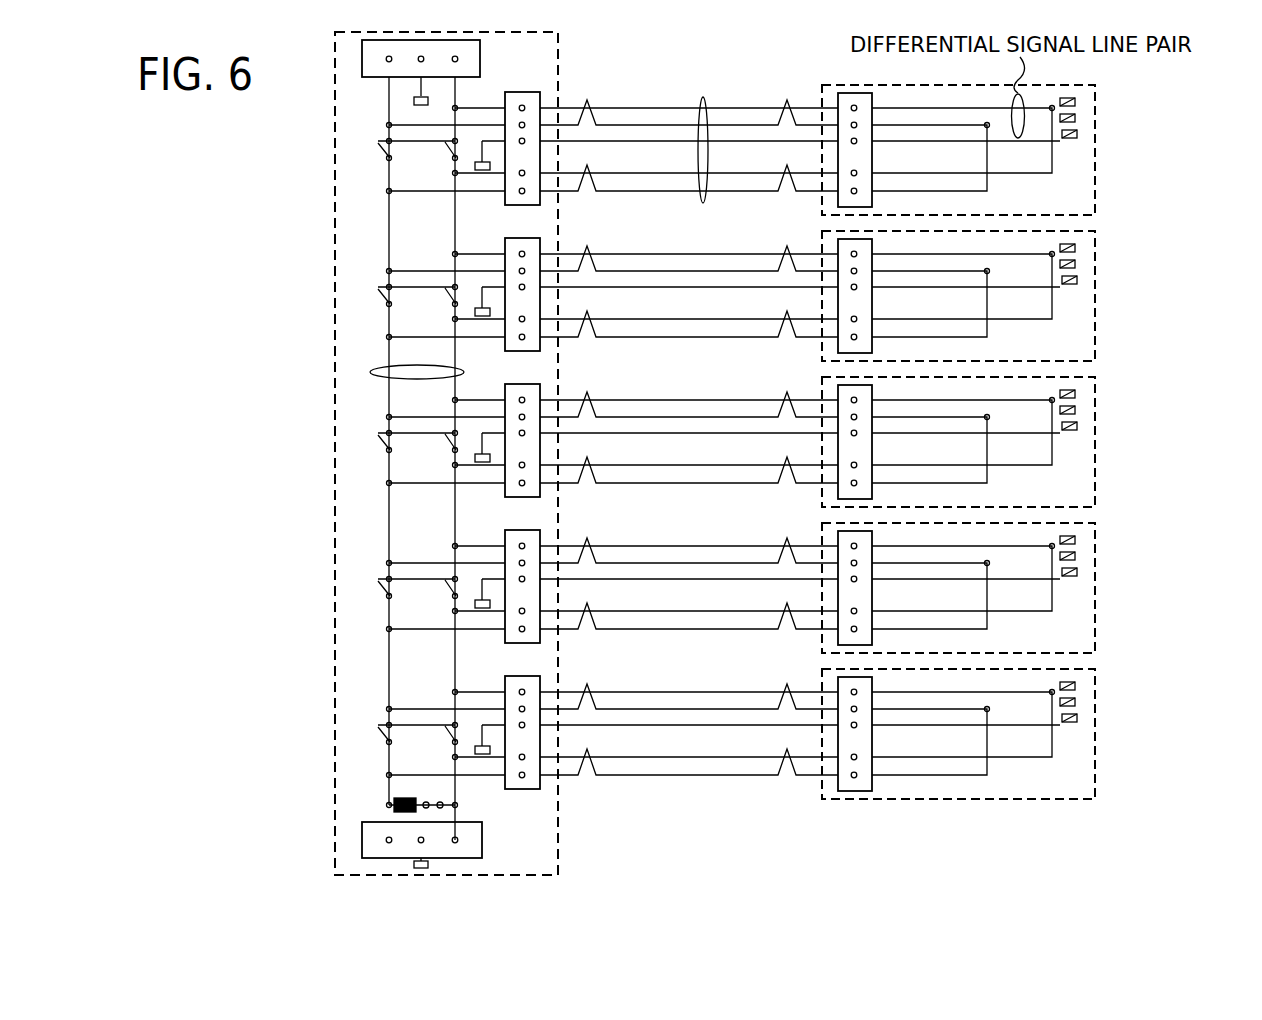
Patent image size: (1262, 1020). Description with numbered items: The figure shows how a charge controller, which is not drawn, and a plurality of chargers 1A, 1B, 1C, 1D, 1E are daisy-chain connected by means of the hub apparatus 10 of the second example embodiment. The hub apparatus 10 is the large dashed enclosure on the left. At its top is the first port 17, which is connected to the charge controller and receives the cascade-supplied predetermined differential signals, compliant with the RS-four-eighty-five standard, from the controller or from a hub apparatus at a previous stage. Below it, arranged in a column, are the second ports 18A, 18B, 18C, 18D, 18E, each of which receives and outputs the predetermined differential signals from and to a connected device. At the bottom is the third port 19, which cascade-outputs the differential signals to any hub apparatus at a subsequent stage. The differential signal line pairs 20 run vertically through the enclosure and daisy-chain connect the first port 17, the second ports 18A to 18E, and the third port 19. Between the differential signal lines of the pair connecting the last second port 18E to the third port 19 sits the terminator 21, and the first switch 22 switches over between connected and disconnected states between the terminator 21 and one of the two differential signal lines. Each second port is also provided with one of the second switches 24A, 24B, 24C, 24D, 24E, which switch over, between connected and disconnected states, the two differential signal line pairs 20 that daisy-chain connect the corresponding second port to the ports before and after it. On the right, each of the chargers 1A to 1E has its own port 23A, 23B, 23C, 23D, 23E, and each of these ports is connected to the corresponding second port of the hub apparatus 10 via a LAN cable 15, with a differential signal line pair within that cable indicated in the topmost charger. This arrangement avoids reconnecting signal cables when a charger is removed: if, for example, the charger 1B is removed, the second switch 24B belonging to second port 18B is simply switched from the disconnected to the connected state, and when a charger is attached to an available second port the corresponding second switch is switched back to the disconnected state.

The hub apparatus 10 is at (560, 852).
The LAN cable 15 is at (703, 97).
The first port 17 is at (483, 62).
The second port 18A is at (540, 93).
The second port 18B is at (540, 239).
The second port 18C is at (540, 385).
The second port 18D is at (540, 531).
The second port 18E is at (540, 677).
The third port 19 is at (483, 840).
The differential signal line pairs 20 is at (380, 372).
The terminator 21 is at (400, 797).
The first switch 22 is at (440, 799).
The port 23A is at (840, 94).
The port 23B is at (840, 240).
The port 23C is at (840, 386).
The port 23D is at (840, 532).
The port 23E is at (840, 678).
The second switch 24A is at (378, 149).
The second switch 24B is at (378, 295).
The second switch 24C is at (378, 441).
The second switch 24D is at (378, 587).
The second switch 24E is at (378, 733).
The charger 1A is at (1097, 153).
The charger 1B is at (1097, 299).
The charger 1C is at (1097, 445).
The charger 1D is at (1097, 591).
The charger 1E is at (1097, 737).